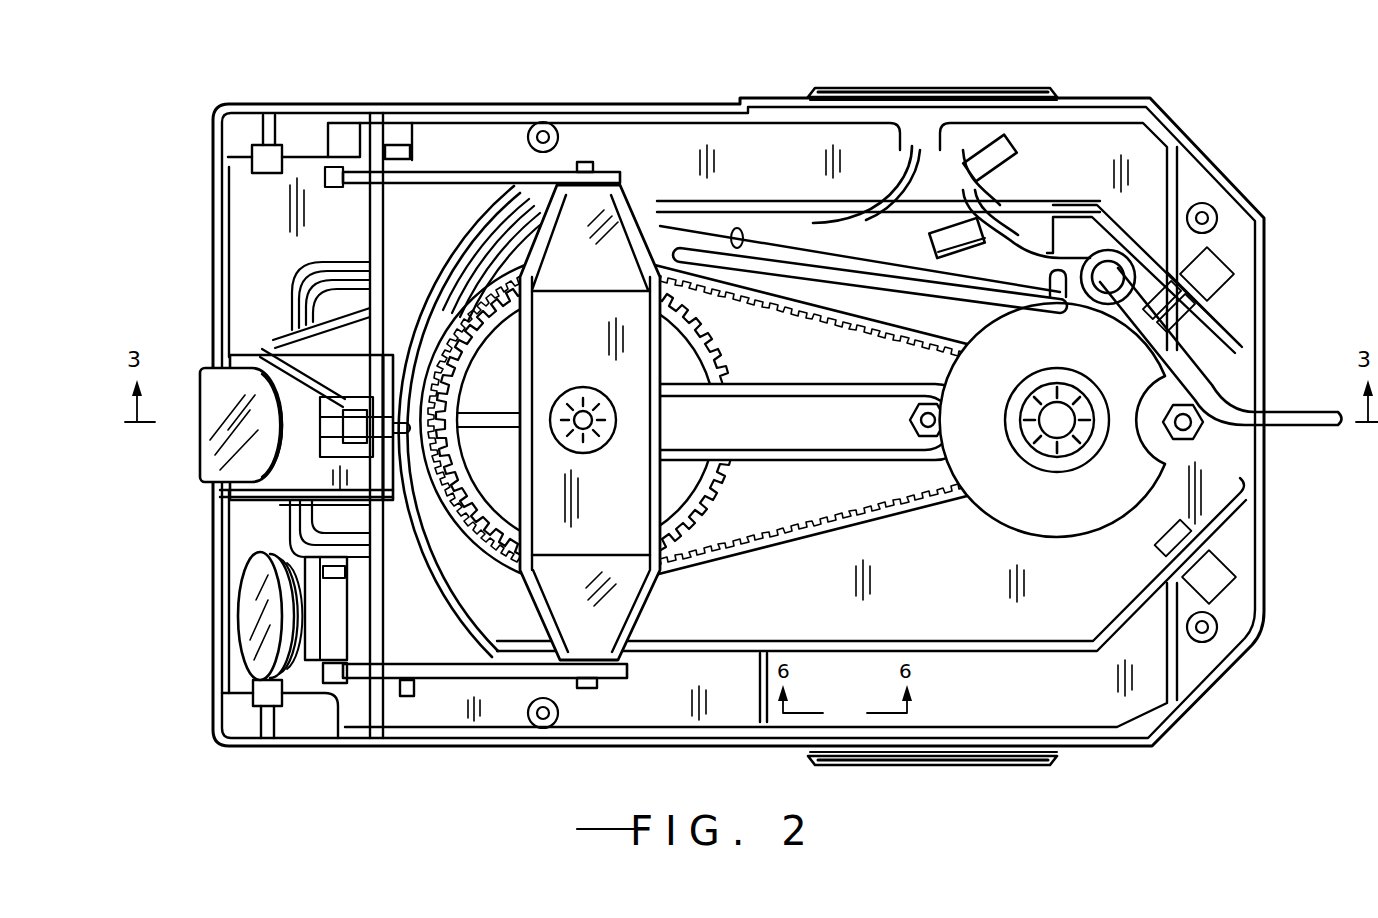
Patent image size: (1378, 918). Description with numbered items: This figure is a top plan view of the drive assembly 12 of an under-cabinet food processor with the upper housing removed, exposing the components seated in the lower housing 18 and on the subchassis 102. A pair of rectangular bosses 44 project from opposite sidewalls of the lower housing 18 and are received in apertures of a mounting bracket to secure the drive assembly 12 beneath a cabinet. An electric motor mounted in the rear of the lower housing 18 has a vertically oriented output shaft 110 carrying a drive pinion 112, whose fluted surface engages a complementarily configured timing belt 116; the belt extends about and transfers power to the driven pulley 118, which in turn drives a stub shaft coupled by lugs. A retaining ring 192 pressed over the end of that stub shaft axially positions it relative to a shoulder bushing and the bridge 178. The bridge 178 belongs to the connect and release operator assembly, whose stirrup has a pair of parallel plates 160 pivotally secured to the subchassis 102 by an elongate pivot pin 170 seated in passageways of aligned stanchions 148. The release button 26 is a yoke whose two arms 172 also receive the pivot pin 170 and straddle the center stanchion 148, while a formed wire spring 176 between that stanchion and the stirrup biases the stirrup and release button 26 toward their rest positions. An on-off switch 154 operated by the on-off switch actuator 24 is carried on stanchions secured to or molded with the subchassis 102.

The drive assembly 12 is at (1228, 704).
The lower housing 18 is at (1245, 652).
The on-off switch actuator 24 is at (257, 615).
The release button 26 is at (210, 448).
The rectangular bosses 44 is at (922, 97).
The subchassis 102 is at (960, 588).
The output shaft 110 is at (1060, 432).
The drive pinion 112 is at (1082, 392).
The timing belt 116 is at (838, 332).
The driven pulley 118 is at (727, 506).
The stanchions 148 is at (402, 425).
The on-off switch 154 is at (333, 613).
The parallel plates 160 is at (505, 170).
The pivot pin 170 is at (377, 523).
The arms 172 is at (340, 365).
The formed wire spring 176 is at (305, 390).
The bridge 178 is at (630, 529).
The retaining ring 192 is at (572, 390).